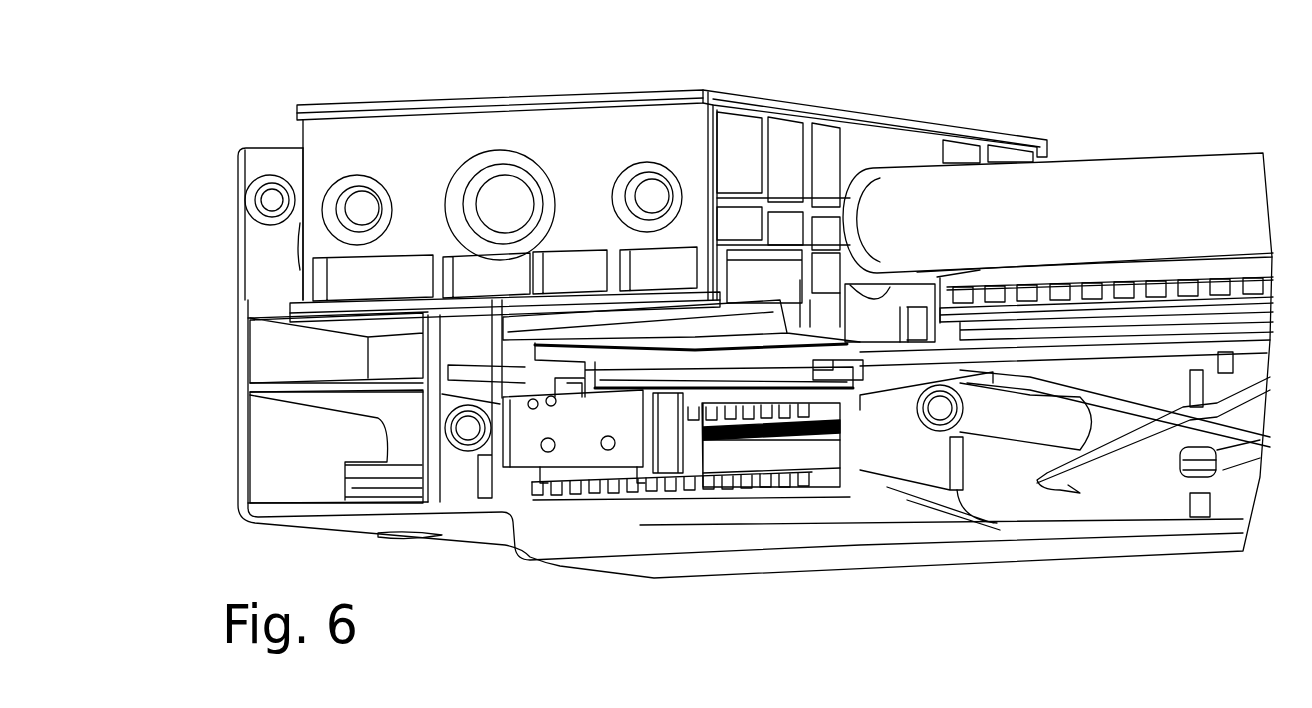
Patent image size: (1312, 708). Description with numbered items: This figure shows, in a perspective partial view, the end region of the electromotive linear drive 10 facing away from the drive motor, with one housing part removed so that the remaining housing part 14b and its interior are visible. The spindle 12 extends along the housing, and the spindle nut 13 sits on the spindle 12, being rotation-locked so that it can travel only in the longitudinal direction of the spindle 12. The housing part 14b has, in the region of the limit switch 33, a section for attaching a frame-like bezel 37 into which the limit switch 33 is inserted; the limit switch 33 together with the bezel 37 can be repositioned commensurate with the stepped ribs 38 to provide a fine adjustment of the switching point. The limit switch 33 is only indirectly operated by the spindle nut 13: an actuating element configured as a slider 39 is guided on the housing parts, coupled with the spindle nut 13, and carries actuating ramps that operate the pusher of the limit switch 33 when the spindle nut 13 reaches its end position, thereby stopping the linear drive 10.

The electromotive linear drive 10 is at (1068, 126).
The spindle 12 is at (1175, 203).
The spindle nut 13 is at (583, 152).
The housing part 14b is at (995, 550).
The limit switch 33 is at (578, 441).
The bezel 37 is at (660, 493).
The stepped ribs 38 is at (700, 482).
The slider 39 is at (810, 367).